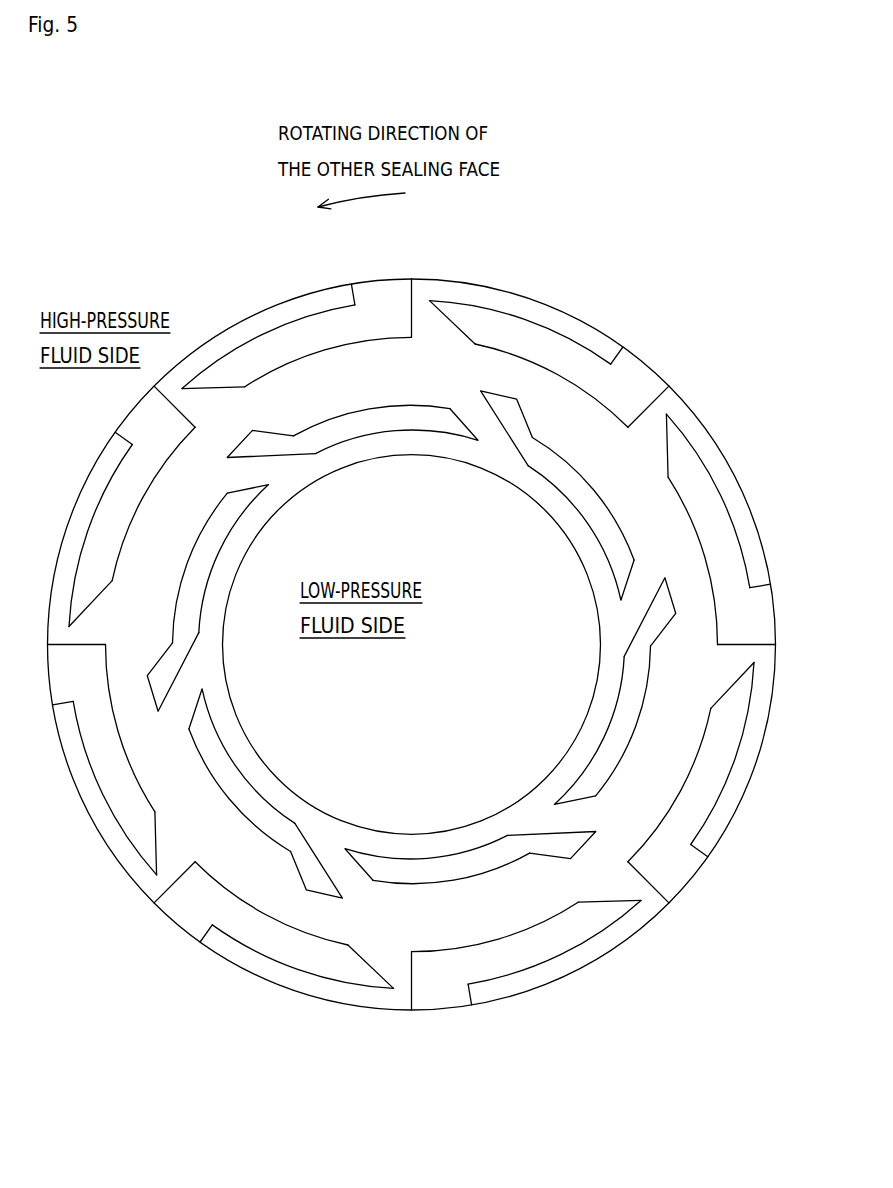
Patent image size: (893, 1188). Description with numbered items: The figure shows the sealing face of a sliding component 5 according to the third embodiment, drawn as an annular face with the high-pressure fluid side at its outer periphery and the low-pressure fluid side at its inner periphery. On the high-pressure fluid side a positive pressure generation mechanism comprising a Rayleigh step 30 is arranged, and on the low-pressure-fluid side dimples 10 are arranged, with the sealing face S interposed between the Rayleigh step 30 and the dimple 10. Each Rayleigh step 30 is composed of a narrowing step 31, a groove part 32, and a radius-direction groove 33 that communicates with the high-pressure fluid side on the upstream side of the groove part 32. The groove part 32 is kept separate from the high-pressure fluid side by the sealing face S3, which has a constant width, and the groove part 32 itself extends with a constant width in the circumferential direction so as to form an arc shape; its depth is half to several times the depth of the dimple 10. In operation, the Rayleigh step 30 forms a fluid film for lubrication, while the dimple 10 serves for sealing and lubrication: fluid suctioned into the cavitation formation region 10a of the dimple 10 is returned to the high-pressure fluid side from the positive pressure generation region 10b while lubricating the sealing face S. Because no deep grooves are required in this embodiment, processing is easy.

The sealing face of sliding component 5 is at (288, 303).
The dimple 10 is at (360, 438).
The cavitation formation region 10a is at (420, 423).
The positive pressure generation region 10b is at (260, 443).
The Rayleigh step 30 is at (262, 332).
The narrowing step 31 is at (218, 388).
The groove part 32 is at (343, 333).
The radius-direction groove 33 is at (395, 293).
The sealing face S is at (580, 442).
The sealing face (land of constant width) S3 is at (222, 346).